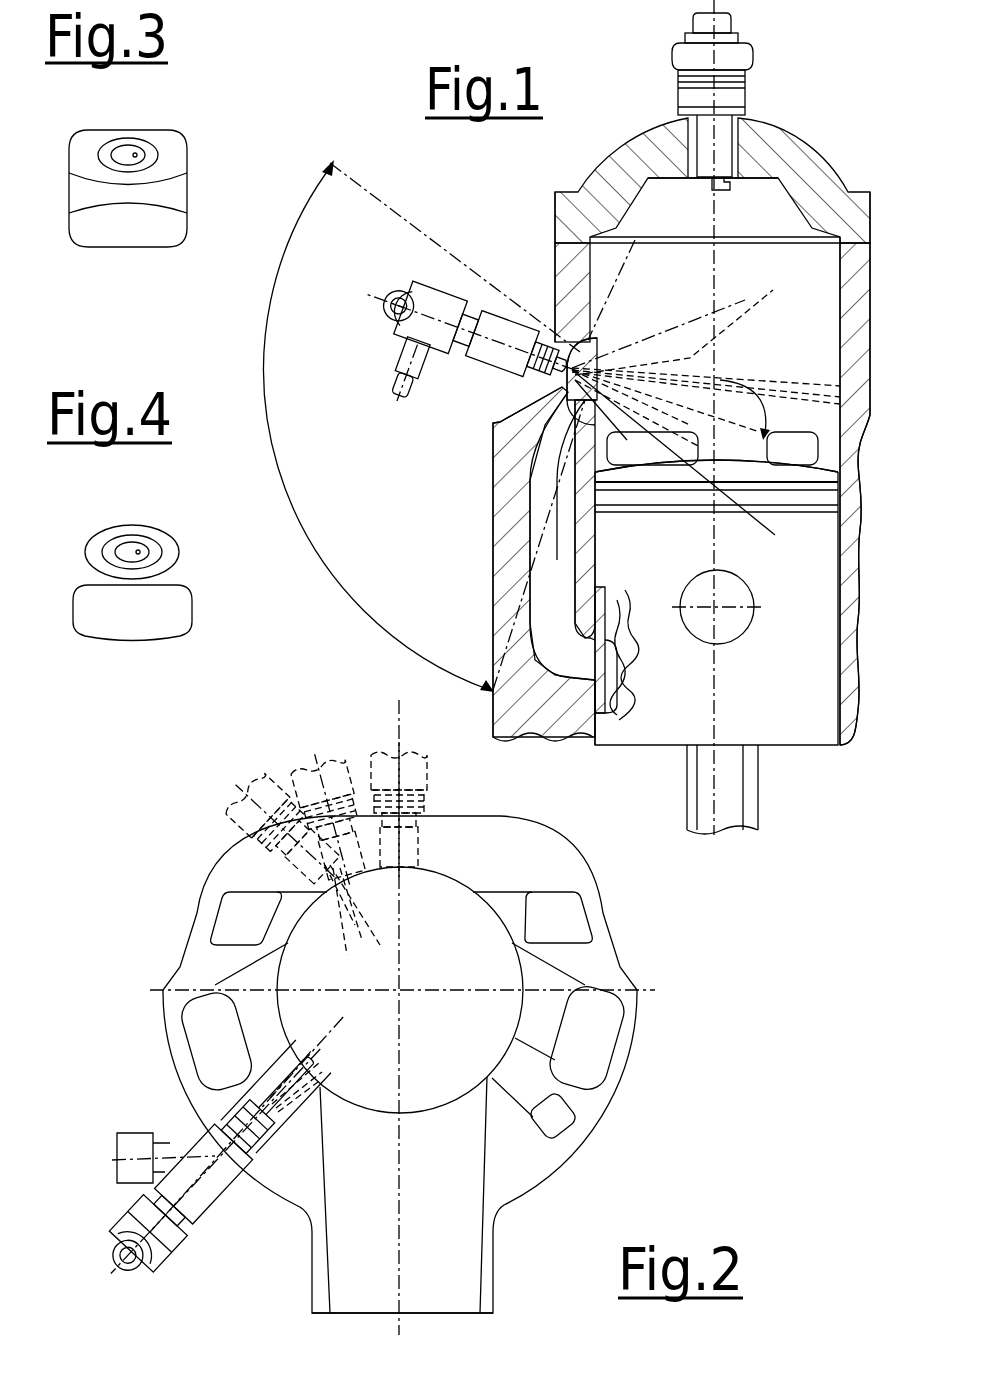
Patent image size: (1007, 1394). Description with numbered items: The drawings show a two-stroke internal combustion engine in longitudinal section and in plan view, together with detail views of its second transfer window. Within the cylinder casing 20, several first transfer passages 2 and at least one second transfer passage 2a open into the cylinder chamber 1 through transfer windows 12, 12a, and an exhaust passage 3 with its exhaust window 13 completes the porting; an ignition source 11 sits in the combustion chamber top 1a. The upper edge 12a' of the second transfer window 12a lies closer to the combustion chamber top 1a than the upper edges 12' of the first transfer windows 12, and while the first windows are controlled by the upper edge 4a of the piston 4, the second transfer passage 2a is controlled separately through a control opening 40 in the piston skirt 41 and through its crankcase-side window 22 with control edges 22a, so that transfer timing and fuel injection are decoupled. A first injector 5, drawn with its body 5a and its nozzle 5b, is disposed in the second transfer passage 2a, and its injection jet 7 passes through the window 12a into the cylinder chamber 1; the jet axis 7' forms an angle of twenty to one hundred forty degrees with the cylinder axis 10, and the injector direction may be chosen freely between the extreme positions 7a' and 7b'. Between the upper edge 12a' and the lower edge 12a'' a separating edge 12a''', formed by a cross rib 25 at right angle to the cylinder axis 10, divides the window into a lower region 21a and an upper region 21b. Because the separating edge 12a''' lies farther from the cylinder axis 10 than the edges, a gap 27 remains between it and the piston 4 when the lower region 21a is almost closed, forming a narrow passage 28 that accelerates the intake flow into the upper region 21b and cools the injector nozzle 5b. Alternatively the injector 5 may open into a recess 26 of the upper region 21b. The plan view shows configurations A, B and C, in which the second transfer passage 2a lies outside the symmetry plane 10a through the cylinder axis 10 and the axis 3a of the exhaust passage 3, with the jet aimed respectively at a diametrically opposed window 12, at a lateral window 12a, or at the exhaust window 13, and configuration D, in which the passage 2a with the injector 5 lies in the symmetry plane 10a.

In FIG. 1, the cylinder chamber 1 is at (606, 279).
In FIG. 1, the combustion chamber top 1a is at (762, 182).
In FIG. 1, the first transfer passages 2 is at (678, 452).
In FIG. 2, the first transfer passages 2 is at (218, 915).
In FIG. 1, the second transfer passage 2a is at (543, 558).
In FIG. 2, the second transfer passage 2a is at (287, 857).
In FIG. 2, the exhaust passage 3 is at (463, 1273).
In FIG. 2, the axis of the exhaust passage 3a is at (403, 1270).
In FIG. 1, the piston 4 is at (798, 727).
In FIG. 1, the upper edge of the piston 4a is at (841, 473).
In FIG. 3, the first injector 5 is at (125, 150).
In FIG. 4, the first injector 5 is at (128, 545).
In FIG. 1, the first injector 5 is at (498, 325).
In FIG. 2, the first injector 5 is at (200, 1150).
In FIG. 1, the injector body 5a is at (510, 352).
In FIG. 3, the injector nozzle 5b is at (135, 153).
In FIG. 4, the injector nozzle 5b is at (138, 551).
In FIG. 1, the injector nozzle 5b is at (515, 403).
In FIG. 1, the injection jet 7 is at (666, 320).
In FIG. 2, the injection jet 7 is at (298, 1087).
In FIG. 1, the jet axis 7' is at (681, 466).
In FIG. 2, the jet axis 7' is at (341, 957).
In FIG. 1, the extreme position of the jet axis 7a' is at (455, 257).
In FIG. 1, the extreme position of the jet axis 7b' is at (511, 572).
In FIG. 1, the cylinder axis 10 is at (718, 702).
In FIG. 2, the cylinder axis 10 is at (404, 994).
In FIG. 2, the symmetry plane 10a is at (396, 1128).
In FIG. 1, the ignition source 11 is at (722, 148).
In FIG. 1, the first transfer windows 12 is at (752, 503).
In FIG. 2, the first transfer windows 12 is at (395, 958).
In FIG. 1, the upper edges of the first transfer windows 12' is at (722, 390).
In FIG. 3, the second transfer window 12a is at (139, 219).
In FIG. 4, the second transfer window 12a is at (141, 642).
In FIG. 1, the second transfer window 12a is at (706, 407).
In FIG. 2, the second transfer window 12a is at (398, 990).
In FIG. 3, the upper edge of the second transfer window 12a' is at (177, 123).
In FIG. 4, the upper edge of the second transfer window 12a' is at (171, 517).
In FIG. 1, the upper edge of the second transfer window 12a' is at (674, 332).
In FIG. 3, the lower edge of the second transfer window 12a'' is at (109, 278).
In FIG. 4, the lower edge of the second transfer window 12a'' is at (109, 669).
In FIG. 3, the separating edge 12a''' is at (221, 166).
In FIG. 4, the separating edge 12a''' is at (185, 552).
In FIG. 1, the separating edge 12a''' is at (486, 485).
In FIG. 2, the exhaust window 13 is at (437, 1112).
In FIG. 1, the cylinder casing 20 is at (853, 693).
In FIG. 2, the cylinder casing 20 is at (530, 1172).
In FIG. 3, the lower region 21a is at (165, 232).
In FIG. 4, the lower region 21a is at (165, 622).
In FIG. 1, the lower region 21a is at (655, 445).
In FIG. 3, the upper region 21b is at (175, 150).
In FIG. 4, the upper region 21b is at (168, 548).
In FIG. 1, the upper region 21b is at (596, 358).
In FIG. 1, the crankcase-side window 22 is at (612, 700).
In FIG. 1, the control edges 22a is at (590, 682).
In FIG. 3, the cross rib 25 is at (130, 208).
In FIG. 4, the cross rib 25 is at (130, 601).
In FIG. 1, the cross rib 25 is at (562, 402).
In FIG. 1, the recess 26 is at (630, 290).
In FIG. 1, the gap 27 is at (627, 440).
In FIG. 1, the narrow passage 28 is at (563, 560).
In FIG. 1, the control opening 40 is at (618, 660).
In FIG. 1, the piston skirt 41 is at (597, 747).
In FIG. 2, the first configuration A is at (237, 1200).
In FIG. 2, the second configuration B is at (247, 778).
In FIG. 2, the third configuration C is at (320, 745).
In FIG. 2, the fourth configuration D is at (399, 731).